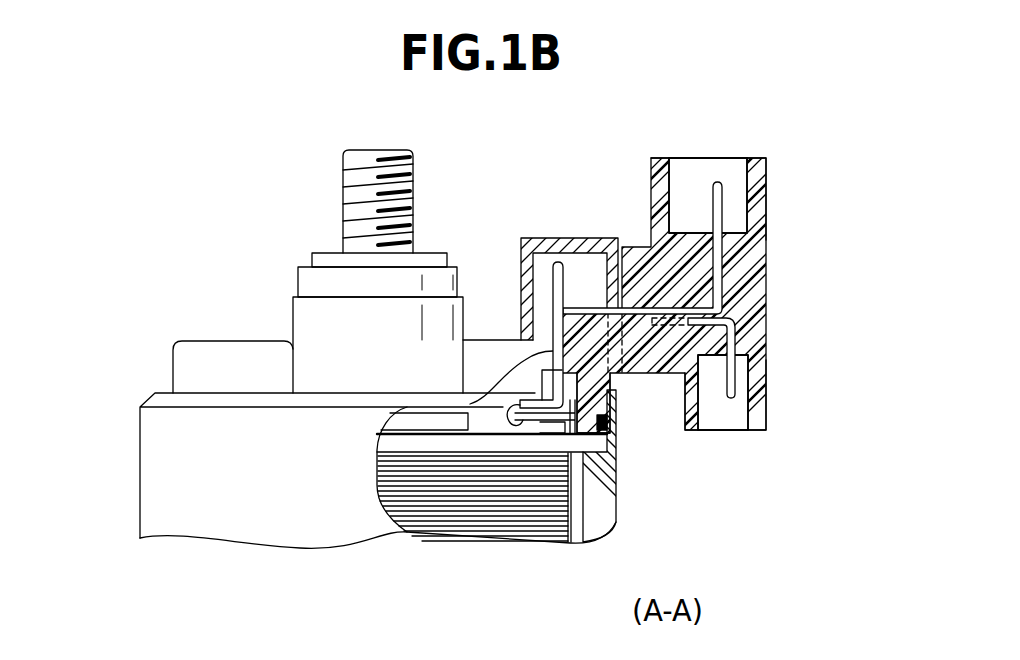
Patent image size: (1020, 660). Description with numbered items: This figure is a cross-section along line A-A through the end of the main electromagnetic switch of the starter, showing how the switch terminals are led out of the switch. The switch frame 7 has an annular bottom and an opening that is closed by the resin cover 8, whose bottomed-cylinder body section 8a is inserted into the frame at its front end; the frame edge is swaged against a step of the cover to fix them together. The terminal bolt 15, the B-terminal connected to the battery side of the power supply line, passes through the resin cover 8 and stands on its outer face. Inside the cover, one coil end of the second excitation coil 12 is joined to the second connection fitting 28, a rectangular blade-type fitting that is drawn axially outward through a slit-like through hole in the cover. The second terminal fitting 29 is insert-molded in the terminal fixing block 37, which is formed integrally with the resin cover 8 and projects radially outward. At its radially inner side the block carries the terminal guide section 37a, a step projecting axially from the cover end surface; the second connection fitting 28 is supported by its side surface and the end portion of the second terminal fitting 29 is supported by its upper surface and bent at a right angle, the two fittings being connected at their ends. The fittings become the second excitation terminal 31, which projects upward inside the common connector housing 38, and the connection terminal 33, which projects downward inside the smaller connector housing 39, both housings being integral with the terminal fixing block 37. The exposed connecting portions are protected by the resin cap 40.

The switch frame 7 is at (607, 500).
The resin cover 8 is at (220, 357).
The body section 8a is at (617, 393).
The second excitation coil 12 is at (545, 522).
The terminal bolt 15 is at (360, 178).
The second connection fitting 28 is at (552, 330).
The second terminal fitting 29 is at (593, 312).
The second excitation terminal 31 is at (717, 200).
The connection terminal 33 is at (721, 387).
The terminal fixing block 37 is at (653, 265).
The terminal guide section 37a is at (587, 393).
The common connector housing 38 is at (760, 194).
The connector housing 39 is at (757, 410).
The cap 40 is at (543, 245).